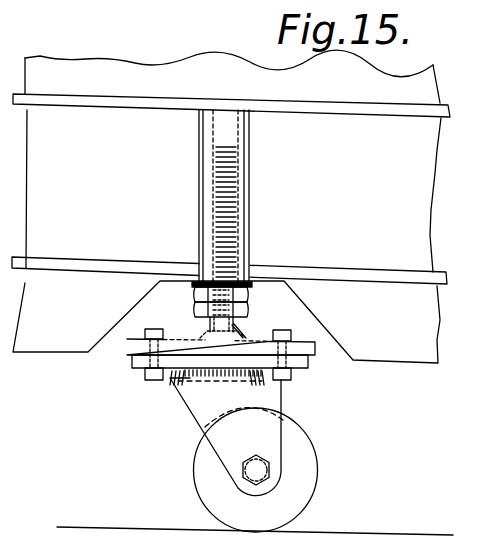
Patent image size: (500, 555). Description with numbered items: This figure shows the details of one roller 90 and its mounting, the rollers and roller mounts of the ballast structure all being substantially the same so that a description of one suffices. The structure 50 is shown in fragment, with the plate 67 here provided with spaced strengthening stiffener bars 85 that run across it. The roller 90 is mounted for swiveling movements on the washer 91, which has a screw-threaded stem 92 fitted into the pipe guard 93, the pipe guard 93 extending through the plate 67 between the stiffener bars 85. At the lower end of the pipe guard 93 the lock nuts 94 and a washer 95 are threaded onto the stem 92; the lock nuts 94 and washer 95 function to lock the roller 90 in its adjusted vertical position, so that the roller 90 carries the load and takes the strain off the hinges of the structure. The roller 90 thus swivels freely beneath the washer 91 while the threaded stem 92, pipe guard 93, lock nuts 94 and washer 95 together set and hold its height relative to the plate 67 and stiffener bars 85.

The frame body 50 is at (0, 22).
The plate 67 is at (125, 62).
The stiffener bars 85 is at (22, 105).
The pipe guard 93 is at (246, 155).
The washer 95 is at (247, 285).
The lock nuts 94 is at (248, 304).
The screw-threaded stem 92 is at (210, 322).
The washer 91 is at (147, 354).
The roller 90 is at (313, 437).